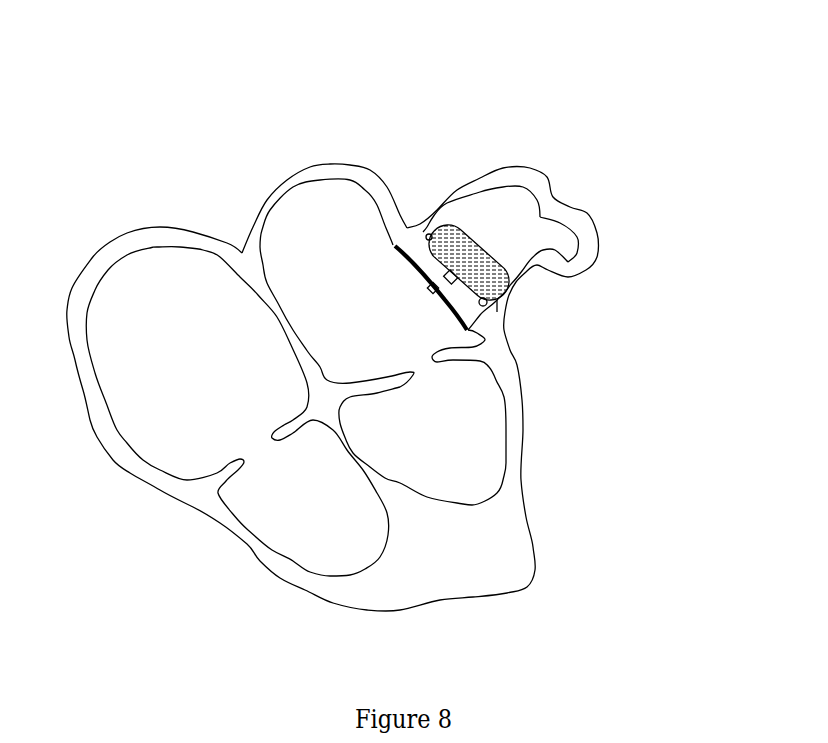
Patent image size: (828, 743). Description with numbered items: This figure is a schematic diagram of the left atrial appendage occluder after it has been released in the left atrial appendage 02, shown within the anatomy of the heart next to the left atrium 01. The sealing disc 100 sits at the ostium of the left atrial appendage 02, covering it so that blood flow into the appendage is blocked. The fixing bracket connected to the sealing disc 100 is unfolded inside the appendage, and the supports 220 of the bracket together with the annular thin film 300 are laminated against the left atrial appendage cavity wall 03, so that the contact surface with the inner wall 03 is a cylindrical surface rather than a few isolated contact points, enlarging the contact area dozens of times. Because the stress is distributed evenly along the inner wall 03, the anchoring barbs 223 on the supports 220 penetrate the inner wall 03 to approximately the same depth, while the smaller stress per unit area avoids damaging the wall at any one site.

The left atrium 01 is at (333, 230).
The left atrial appendage 02 is at (522, 204).
The left atrial appendage cavity wall 03 is at (588, 241).
The sealing disc 100 is at (473, 327).
The supports 220 is at (503, 283).
The anchoring barb 223 is at (427, 232).
The thin film 300 is at (510, 302).